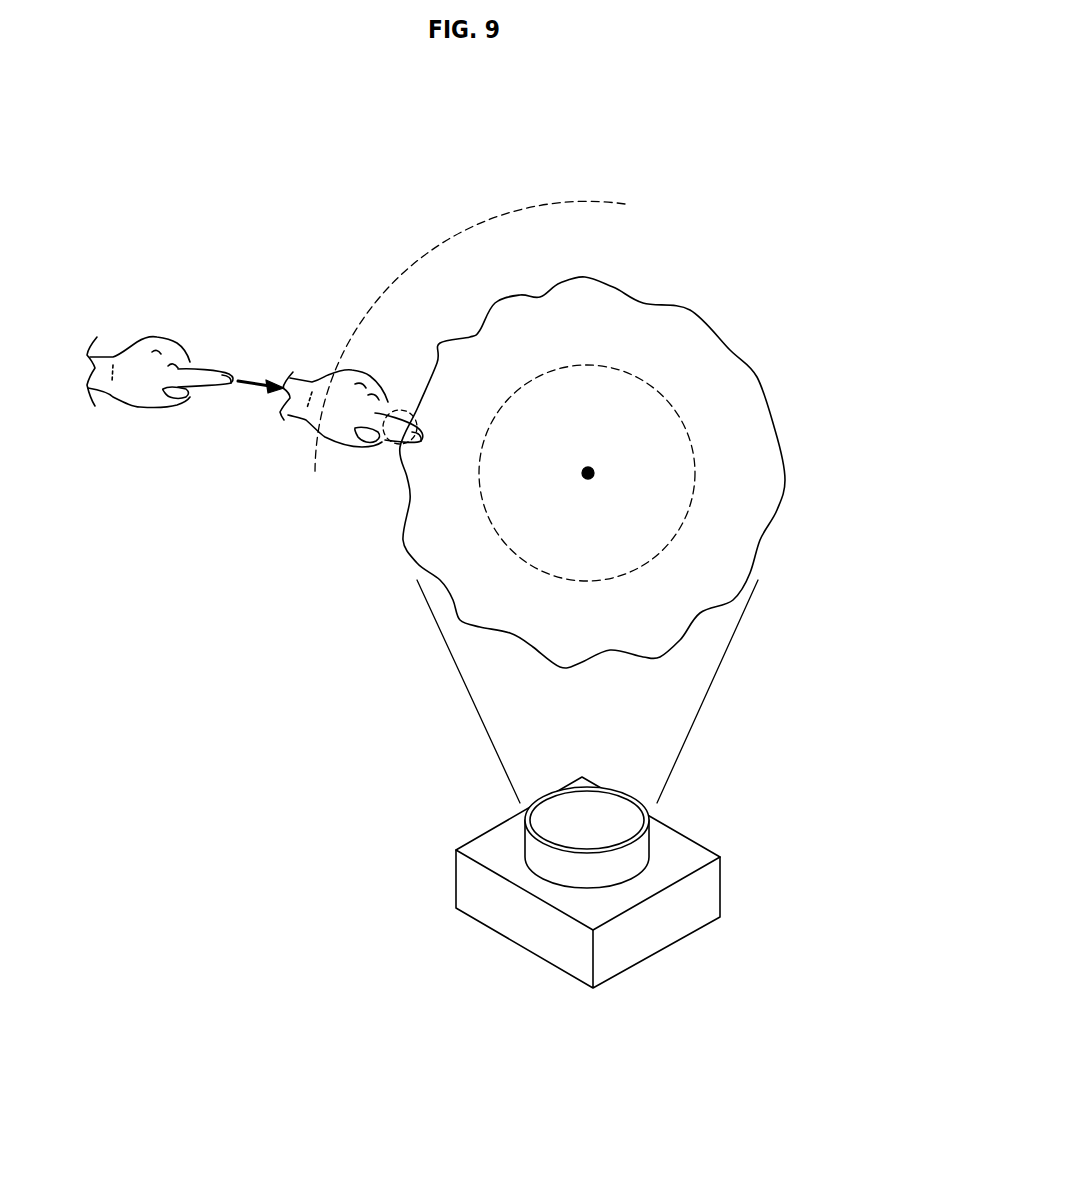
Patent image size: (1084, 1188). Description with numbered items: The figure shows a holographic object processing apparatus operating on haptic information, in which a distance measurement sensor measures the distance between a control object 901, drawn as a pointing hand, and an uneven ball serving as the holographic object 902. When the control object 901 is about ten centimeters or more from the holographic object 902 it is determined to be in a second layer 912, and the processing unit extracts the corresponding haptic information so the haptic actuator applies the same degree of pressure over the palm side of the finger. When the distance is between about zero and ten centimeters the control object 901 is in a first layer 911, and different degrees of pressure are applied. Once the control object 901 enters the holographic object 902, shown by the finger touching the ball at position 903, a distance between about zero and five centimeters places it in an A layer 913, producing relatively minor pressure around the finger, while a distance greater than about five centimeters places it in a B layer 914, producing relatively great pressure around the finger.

The control object 901 is at (150, 330).
The holographic object 902 is at (765, 423).
The user finger touching 903 is at (395, 414).
The first layer 911 is at (668, 247).
The second layer 912 is at (682, 163).
The A layer 913 is at (647, 325).
The B layer 914 is at (647, 407).